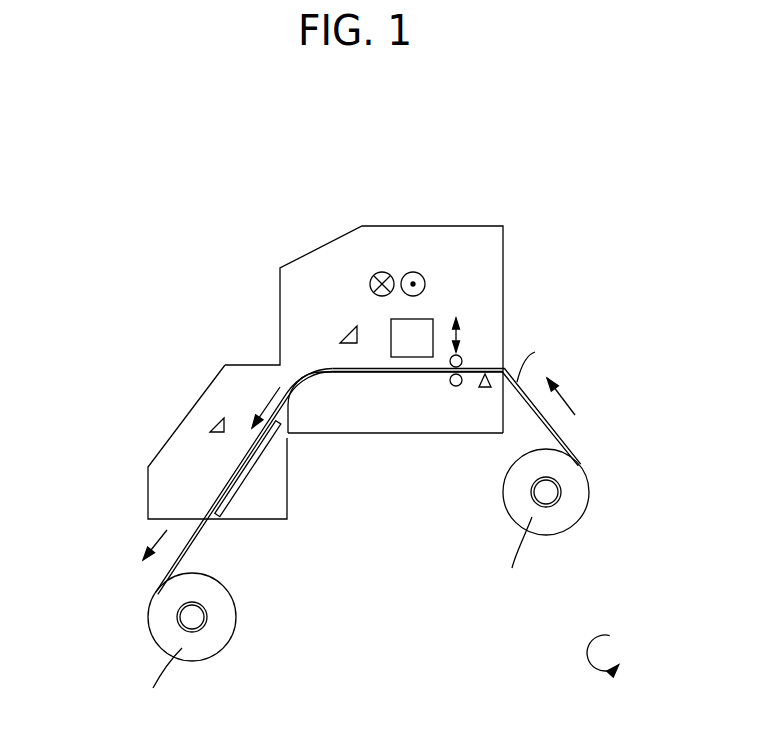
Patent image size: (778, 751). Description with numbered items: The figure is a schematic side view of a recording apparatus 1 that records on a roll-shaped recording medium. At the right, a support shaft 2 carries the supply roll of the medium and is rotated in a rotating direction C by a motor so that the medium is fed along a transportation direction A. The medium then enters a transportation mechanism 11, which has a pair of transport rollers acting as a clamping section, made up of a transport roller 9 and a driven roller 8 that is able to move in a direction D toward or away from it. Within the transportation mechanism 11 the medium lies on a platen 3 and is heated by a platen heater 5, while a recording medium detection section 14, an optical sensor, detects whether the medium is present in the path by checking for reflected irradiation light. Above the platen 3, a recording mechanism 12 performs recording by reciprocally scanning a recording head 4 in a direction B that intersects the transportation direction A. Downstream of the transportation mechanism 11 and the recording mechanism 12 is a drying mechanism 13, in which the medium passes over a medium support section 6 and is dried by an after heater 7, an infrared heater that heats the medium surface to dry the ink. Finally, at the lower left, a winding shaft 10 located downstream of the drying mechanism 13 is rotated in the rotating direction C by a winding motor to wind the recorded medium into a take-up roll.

The recording apparatus 1 is at (570, 235).
The support shaft 2 is at (548, 493).
The platen 3 is at (423, 412).
The recording head 4 is at (425, 319).
The platen heater 5 is at (350, 343).
The medium support section 6 is at (260, 462).
The after heater 7 is at (210, 424).
The driven roller 8 is at (461, 357).
The transport roller 9 is at (457, 386).
The winding shaft 10 is at (192, 620).
The transportation mechanism 11 is at (355, 437).
The recording mechanism 12 is at (445, 205).
The drying mechanism 13 is at (128, 362).
The recording medium detection section 14 is at (486, 388).